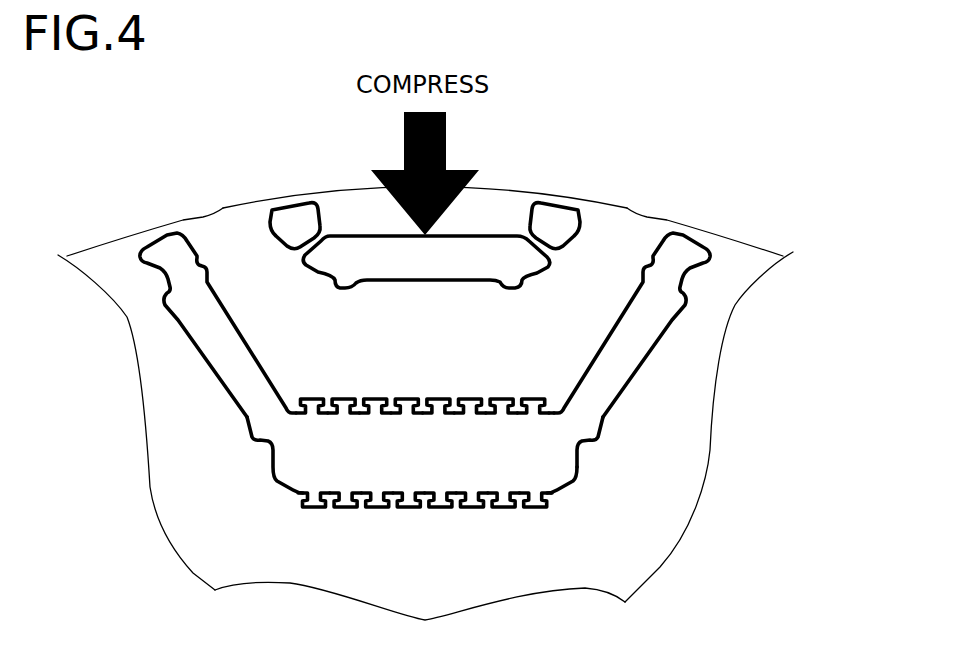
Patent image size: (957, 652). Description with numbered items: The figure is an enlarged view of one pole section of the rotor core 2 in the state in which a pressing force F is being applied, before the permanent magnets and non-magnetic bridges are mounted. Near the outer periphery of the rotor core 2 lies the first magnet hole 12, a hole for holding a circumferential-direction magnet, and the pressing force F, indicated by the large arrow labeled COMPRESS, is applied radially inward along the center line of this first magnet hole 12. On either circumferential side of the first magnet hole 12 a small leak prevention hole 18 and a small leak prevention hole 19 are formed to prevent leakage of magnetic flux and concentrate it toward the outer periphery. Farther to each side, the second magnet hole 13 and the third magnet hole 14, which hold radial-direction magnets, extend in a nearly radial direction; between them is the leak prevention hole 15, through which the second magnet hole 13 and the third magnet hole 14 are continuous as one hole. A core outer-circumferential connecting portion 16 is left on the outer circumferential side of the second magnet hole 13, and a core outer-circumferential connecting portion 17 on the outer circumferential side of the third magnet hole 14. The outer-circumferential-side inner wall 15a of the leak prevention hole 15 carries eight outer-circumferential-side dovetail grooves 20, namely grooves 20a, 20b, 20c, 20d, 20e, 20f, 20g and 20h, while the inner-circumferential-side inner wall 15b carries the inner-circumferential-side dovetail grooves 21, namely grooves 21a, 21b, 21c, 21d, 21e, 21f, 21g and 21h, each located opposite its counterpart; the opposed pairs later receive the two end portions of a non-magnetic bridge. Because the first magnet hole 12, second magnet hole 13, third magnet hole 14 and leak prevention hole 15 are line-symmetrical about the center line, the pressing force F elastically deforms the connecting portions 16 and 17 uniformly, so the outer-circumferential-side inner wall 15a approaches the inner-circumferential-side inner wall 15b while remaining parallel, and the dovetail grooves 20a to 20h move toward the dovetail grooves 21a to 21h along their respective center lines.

The rotor core 2 is at (673, 482).
The first magnet hole 12 is at (318, 243).
The second magnet hole 13 is at (192, 332).
The third magnet hole 14 is at (645, 365).
The leak prevention hole 15 is at (302, 492).
The outer-circumferential-side inner wall 15a is at (523, 437).
The inner-circumferential-side inner wall 15b is at (523, 474).
The core outer-circumferential connecting portion 16 is at (155, 233).
The core outer-circumferential connecting portion 17 is at (697, 233).
The leak prevention hole 18 is at (284, 214).
The leak prevention hole 19 is at (562, 208).
The outer-circumferential-side dovetail grooves 20 is at (433, 347).
The outer-circumferential-side dovetail groove 20a is at (307, 402).
The outer-circumferential-side dovetail groove 20b is at (339, 402).
The outer-circumferential-side dovetail groove 20c is at (370, 402).
The outer-circumferential-side dovetail groove 20d is at (402, 402).
The outer-circumferential-side dovetail groove 20e is at (433, 402).
The outer-circumferential-side dovetail groove 20f is at (465, 402).
The outer-circumferential-side dovetail groove 20g is at (497, 402).
The outer-circumferential-side dovetail groove 20h is at (540, 368).
The inner-circumferential-side dovetail grooves 21 is at (432, 556).
The inner-circumferential-side dovetail groove 21a is at (309, 504).
The inner-circumferential-side dovetail groove 21b is at (341, 504).
The inner-circumferential-side dovetail groove 21c is at (372, 504).
The inner-circumferential-side dovetail groove 21d is at (404, 504).
The inner-circumferential-side dovetail groove 21e is at (435, 504).
The inner-circumferential-side dovetail groove 21f is at (467, 504).
The inner-circumferential-side dovetail groove 21g is at (499, 504).
The inner-circumferential-side dovetail groove 21h is at (541, 534).
The pressing force F is at (447, 142).